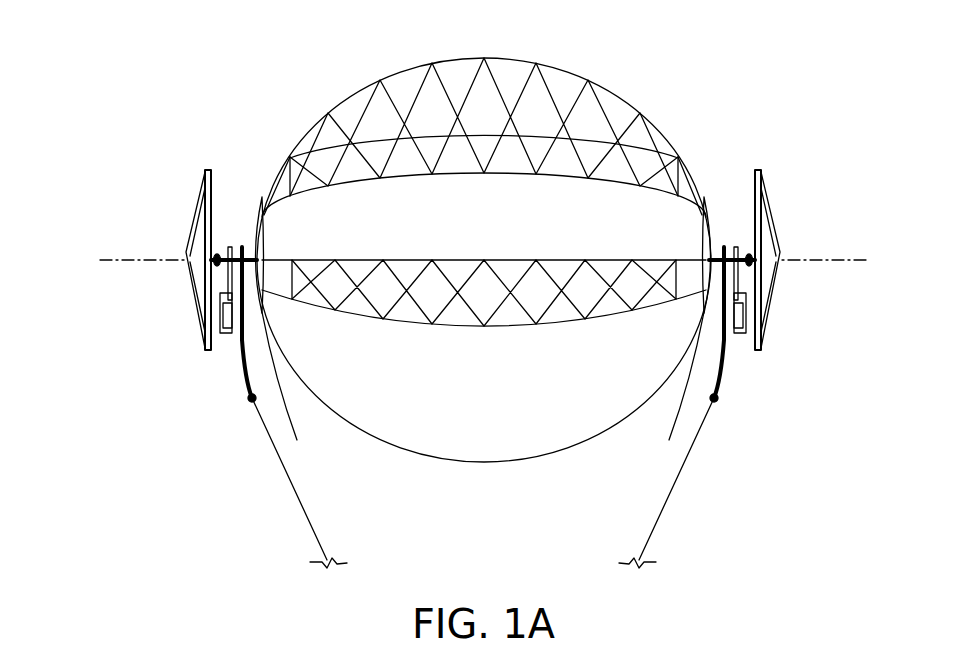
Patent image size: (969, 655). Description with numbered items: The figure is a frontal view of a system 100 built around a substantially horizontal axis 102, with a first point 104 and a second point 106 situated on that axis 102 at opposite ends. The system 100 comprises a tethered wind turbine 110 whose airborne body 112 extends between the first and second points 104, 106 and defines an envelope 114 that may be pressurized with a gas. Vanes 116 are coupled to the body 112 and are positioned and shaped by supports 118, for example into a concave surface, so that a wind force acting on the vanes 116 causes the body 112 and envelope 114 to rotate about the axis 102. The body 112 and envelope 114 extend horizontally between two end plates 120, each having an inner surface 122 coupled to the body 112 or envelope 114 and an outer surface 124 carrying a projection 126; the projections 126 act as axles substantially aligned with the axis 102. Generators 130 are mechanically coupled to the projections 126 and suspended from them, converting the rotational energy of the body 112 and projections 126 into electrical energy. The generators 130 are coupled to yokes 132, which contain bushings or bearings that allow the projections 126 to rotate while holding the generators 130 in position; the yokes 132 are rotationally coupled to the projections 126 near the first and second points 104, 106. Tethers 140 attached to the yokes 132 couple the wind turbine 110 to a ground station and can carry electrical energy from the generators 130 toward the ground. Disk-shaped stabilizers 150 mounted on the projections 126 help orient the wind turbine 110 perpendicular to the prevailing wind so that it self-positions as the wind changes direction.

The system 100 is at (101, 32).
The horizontal axis 102 is at (165, 228).
The first point 104 is at (250, 225).
The second point 106 is at (716, 225).
The tethered wind turbine 110 is at (484, 287).
The body 112 is at (513, 330).
The envelope 114 is at (574, 331).
The vanes 116 is at (560, 260).
The supports 118 is at (380, 112).
The end plates 120 is at (262, 236).
The inner surface 122 is at (277, 243).
The outer surface 124 is at (282, 428).
The projection 126 is at (190, 248).
The generators 130 is at (228, 342).
The yokes 132 is at (249, 400).
The tethers 140 is at (296, 491).
The stabilizers 150 is at (218, 326).